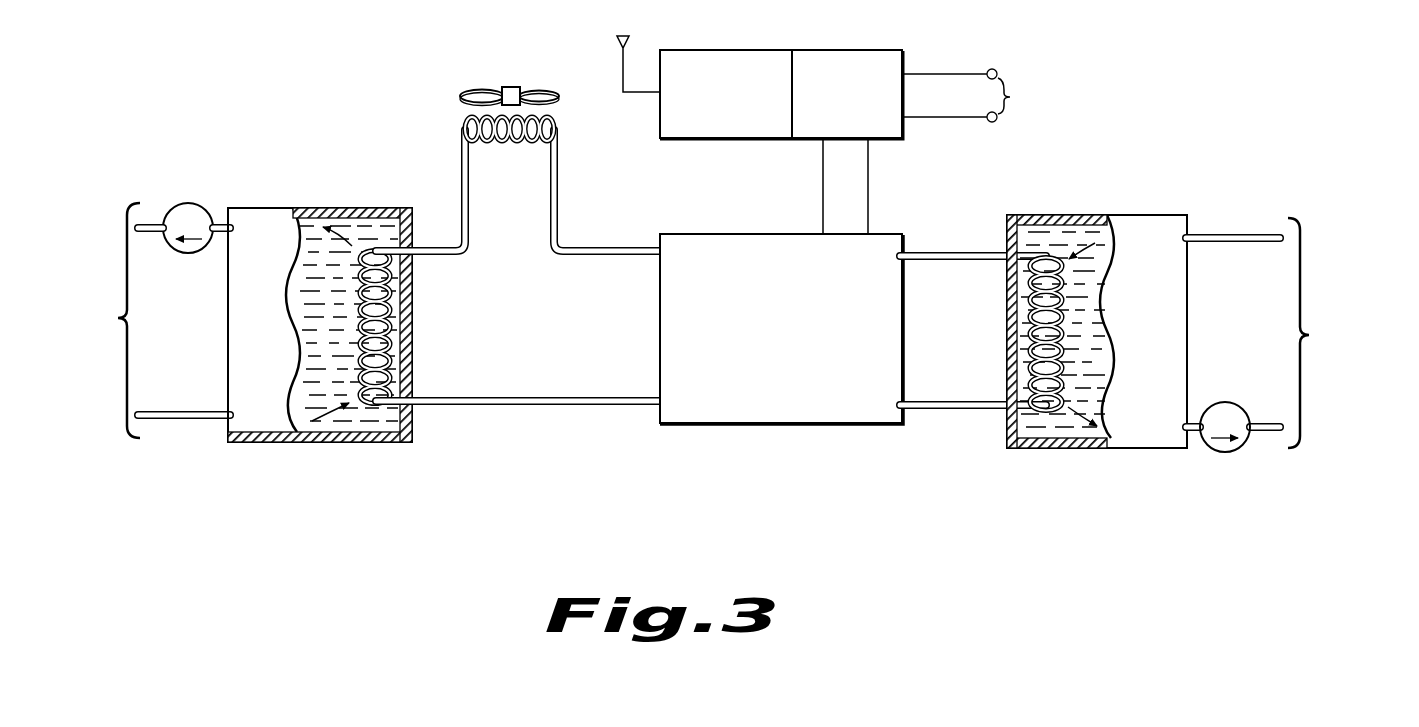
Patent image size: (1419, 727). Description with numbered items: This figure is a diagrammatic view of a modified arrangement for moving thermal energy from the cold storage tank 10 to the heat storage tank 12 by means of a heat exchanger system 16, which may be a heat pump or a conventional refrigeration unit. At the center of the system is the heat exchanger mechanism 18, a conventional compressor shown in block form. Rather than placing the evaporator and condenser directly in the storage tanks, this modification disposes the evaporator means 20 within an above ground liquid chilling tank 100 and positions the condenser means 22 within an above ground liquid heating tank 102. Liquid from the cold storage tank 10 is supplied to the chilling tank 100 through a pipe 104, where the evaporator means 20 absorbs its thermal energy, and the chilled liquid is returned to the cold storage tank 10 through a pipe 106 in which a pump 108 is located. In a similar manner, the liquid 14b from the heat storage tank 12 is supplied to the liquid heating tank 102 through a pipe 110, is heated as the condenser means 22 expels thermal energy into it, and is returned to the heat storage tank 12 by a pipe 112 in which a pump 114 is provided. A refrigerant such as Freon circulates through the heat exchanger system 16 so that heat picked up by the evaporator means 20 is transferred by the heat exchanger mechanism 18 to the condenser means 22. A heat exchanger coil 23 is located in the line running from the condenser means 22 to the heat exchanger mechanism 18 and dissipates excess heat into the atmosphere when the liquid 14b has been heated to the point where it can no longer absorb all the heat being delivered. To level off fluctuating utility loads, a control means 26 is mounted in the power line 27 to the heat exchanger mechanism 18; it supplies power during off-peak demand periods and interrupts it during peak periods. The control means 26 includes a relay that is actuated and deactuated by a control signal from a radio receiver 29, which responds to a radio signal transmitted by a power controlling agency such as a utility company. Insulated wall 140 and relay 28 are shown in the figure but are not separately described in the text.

The cold storage tank 10 is at (1343, 333).
The heat storage tank 12 is at (84, 320).
The liquid 14b is at (373, 423).
The insulated tank wall 140 is at (1050, 433).
The heat exchanger system 16 is at (645, 452).
The heat exchanger mechanism 18 is at (841, 427).
The evaporator means 20 is at (1032, 291).
The condenser means 22 is at (398, 328).
The heat exchanger coil 23 is at (517, 134).
The control means 26 is at (809, 42).
The power line 27 is at (972, 95).
The relay 28 is at (865, 53).
The radio receiver 29 is at (688, 57).
The liquid chilling tank 100 is at (1128, 216).
The liquid heating tank 102 is at (393, 208).
The pipe 104 is at (1213, 232).
The pipe 106 is at (1262, 421).
The pump 108 is at (1217, 453).
The pipe 110 is at (213, 421).
The pipe 112 is at (219, 217).
The pump 114 is at (198, 186).